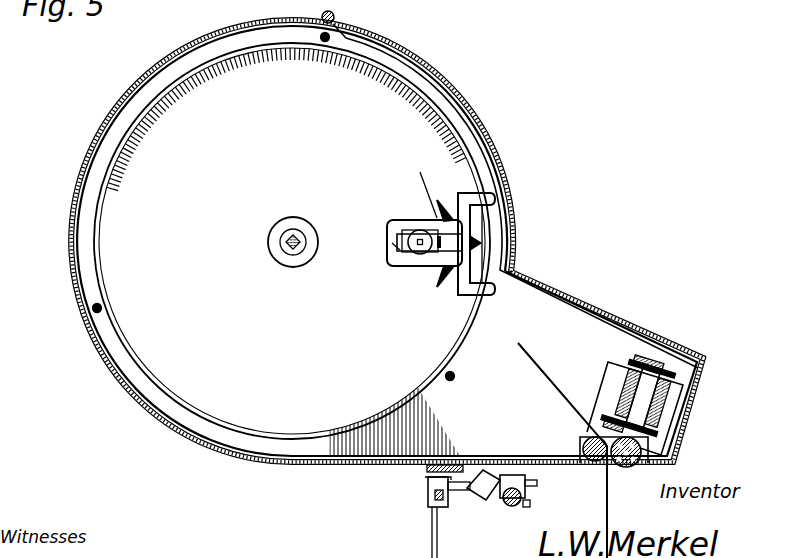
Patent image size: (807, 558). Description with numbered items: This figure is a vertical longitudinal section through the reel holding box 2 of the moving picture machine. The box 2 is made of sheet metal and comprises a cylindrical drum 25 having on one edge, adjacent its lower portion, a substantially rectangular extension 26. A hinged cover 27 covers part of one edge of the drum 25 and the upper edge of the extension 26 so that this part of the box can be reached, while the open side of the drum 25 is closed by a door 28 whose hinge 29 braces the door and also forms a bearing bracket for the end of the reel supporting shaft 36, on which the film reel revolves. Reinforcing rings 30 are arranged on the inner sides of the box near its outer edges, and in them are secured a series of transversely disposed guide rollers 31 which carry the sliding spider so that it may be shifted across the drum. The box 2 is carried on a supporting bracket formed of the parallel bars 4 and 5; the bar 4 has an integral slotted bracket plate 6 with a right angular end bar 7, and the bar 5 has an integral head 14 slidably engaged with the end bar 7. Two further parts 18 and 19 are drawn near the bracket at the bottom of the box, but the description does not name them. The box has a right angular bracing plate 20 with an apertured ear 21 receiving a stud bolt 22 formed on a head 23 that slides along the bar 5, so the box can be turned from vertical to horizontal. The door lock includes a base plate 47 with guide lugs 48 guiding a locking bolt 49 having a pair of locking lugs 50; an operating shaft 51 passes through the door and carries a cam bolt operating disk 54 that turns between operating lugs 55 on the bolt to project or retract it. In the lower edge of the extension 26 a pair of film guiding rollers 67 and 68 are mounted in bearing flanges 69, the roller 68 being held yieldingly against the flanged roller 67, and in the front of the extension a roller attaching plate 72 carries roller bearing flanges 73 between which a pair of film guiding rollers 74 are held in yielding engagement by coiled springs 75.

The reel holding box 2 is at (296, 241).
The bar 4 is at (428, 500).
The bar 5 is at (512, 506).
The slotted bracket plate 6 is at (432, 525).
The end bar 7 is at (537, 483).
The head 14 is at (512, 476).
The lug 18 is at (430, 490).
The plate 19 is at (432, 478).
The bracing plate 20 is at (447, 468).
The apertured ear 21 is at (482, 500).
The stud bolt 22 is at (478, 468).
The head 23 is at (498, 504).
The drum 25 is at (82, 173).
The extension 26 is at (566, 333).
The hinged cover 27 is at (457, 89).
The door 28 is at (292, 241).
The hinge 29 is at (340, 11).
The reinforcing rings 30 is at (468, 359).
The guide rollers 31 is at (326, 44).
The reel supporting shaft 36 is at (297, 232).
The base plate 47 is at (397, 262).
The guide lugs 48 is at (450, 204).
The locking bolt 49 is at (460, 240).
The locking lugs 50 is at (490, 200).
The operating shaft 51 is at (415, 237).
The cam bolt operating disk 54 is at (420, 257).
The operating lugs 55 is at (367, 258).
The film guiding roller 67 is at (583, 446).
The film guiding roller 68 is at (657, 452).
The bearing flanges 69 is at (577, 428).
The roller attaching plate 72 is at (686, 382).
The roller bearing flanges 73 is at (630, 368).
The film guiding rollers 74 is at (636, 400).
The coiled springs 75 is at (662, 380).